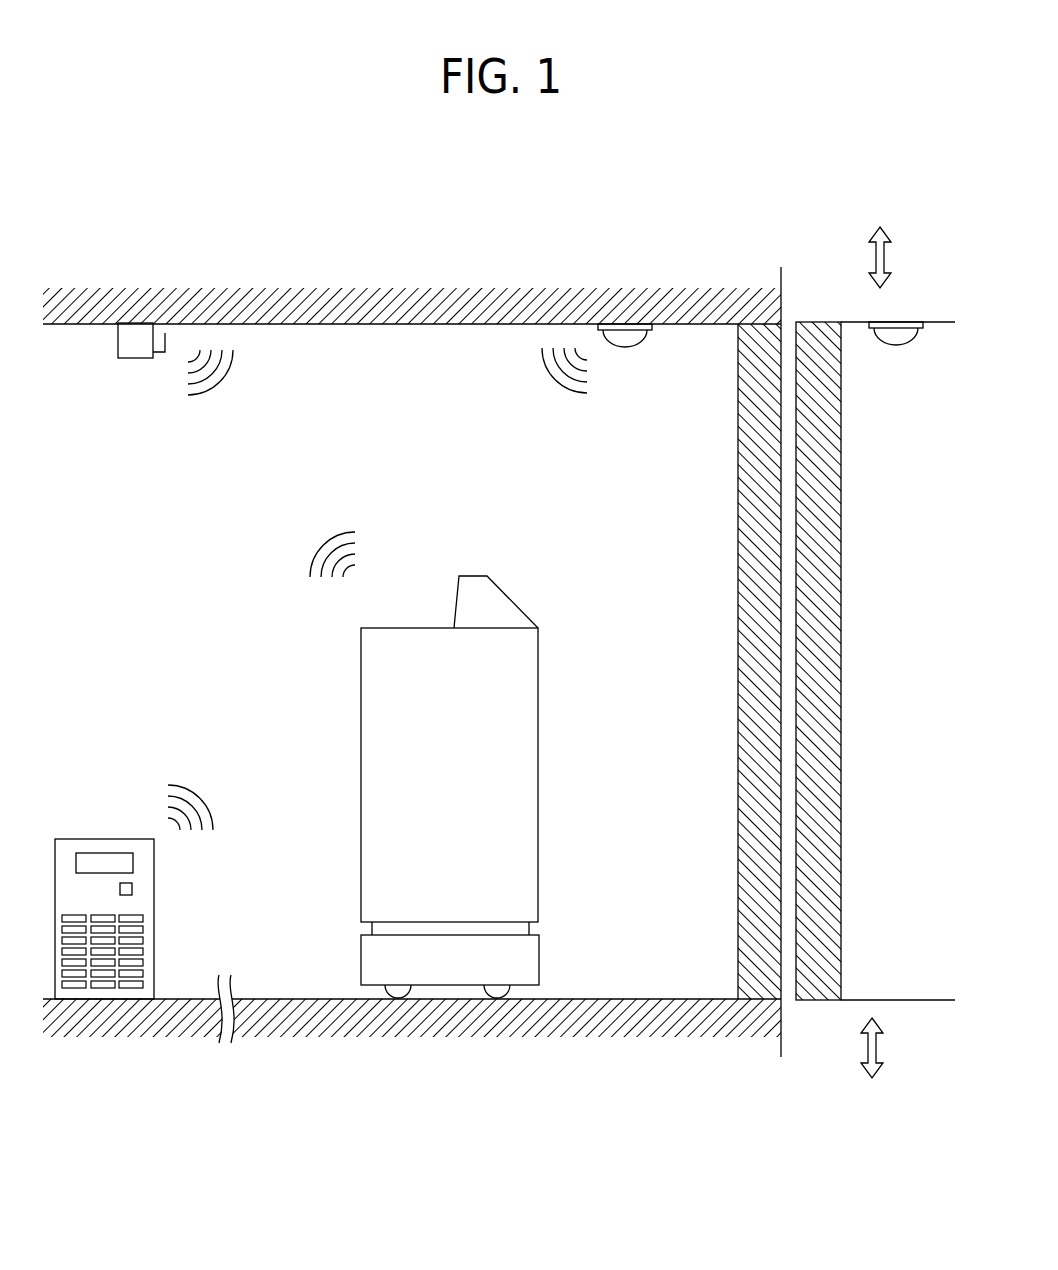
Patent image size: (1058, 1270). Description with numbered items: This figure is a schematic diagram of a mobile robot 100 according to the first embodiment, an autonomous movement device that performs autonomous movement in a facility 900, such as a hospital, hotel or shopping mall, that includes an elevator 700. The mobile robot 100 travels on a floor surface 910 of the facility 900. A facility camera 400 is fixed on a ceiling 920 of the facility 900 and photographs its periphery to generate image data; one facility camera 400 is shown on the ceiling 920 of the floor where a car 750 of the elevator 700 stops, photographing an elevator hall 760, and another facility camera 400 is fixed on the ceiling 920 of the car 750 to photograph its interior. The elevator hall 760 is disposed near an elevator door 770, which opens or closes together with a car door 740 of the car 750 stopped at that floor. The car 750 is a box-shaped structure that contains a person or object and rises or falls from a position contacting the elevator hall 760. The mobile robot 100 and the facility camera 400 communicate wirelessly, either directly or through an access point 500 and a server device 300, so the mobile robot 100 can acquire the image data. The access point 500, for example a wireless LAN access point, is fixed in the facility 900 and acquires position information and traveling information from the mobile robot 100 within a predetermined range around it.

The mobile robot 100 is at (294, 663).
The server device 300 is at (112, 838).
The facility camera 400 is at (650, 335).
The access point 500 is at (142, 360).
The elevator 700 is at (827, 239).
The car door 740 is at (836, 592).
The car 750 is at (885, 499).
The elevator hall 760 is at (660, 737).
The elevator door 770 is at (748, 592).
The facility 900 is at (528, 228).
The floor surface 910 is at (297, 998).
The ceiling 920 is at (500, 324).